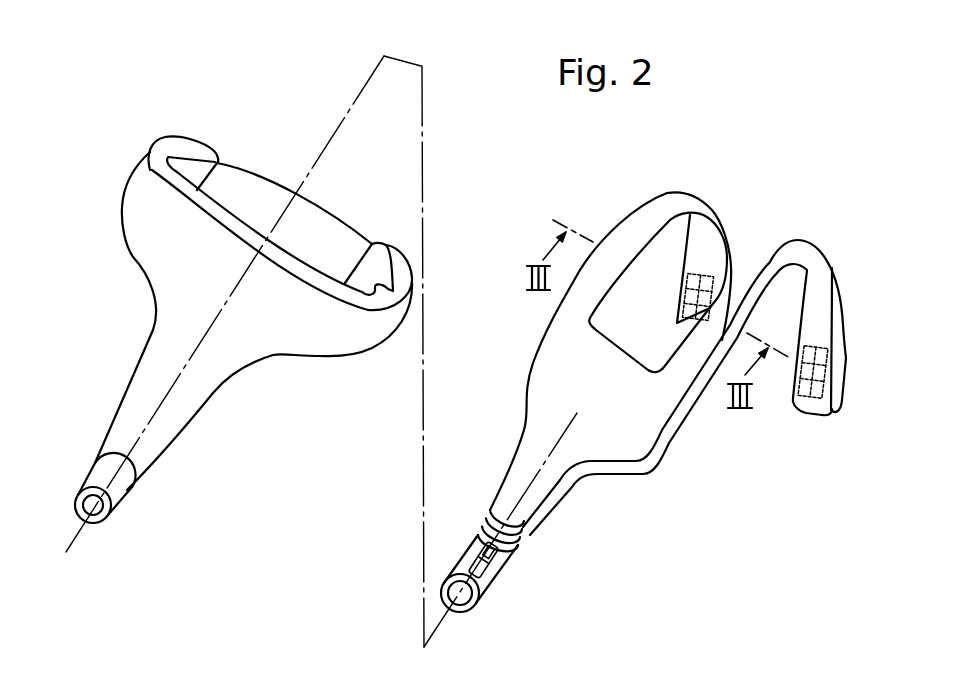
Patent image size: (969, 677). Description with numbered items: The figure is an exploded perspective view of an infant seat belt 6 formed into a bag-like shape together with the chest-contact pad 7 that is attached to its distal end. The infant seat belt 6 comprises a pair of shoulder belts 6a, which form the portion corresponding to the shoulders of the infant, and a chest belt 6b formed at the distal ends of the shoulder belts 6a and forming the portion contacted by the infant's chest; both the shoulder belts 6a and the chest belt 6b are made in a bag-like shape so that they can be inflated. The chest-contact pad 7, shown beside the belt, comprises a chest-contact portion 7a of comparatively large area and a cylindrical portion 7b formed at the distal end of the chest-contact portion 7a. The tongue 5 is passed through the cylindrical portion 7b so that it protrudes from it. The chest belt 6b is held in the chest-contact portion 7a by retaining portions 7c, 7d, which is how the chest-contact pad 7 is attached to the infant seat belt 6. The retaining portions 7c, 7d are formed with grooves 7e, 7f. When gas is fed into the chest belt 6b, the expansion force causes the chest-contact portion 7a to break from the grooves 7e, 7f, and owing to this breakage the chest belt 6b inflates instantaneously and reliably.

The tongue 5 is at (500, 568).
The infant seat belt 6 is at (705, 443).
The shoulder belts 6a is at (640, 217).
The chest belt 6b is at (628, 423).
The chest-contact pad 7 is at (240, 432).
The chest-contact portion 7a is at (274, 338).
The cylindrical portion 7b is at (123, 493).
The retaining portion 7c is at (203, 148).
The retaining portion 7d is at (382, 245).
The groove 7e is at (170, 176).
The groove 7f is at (367, 297).